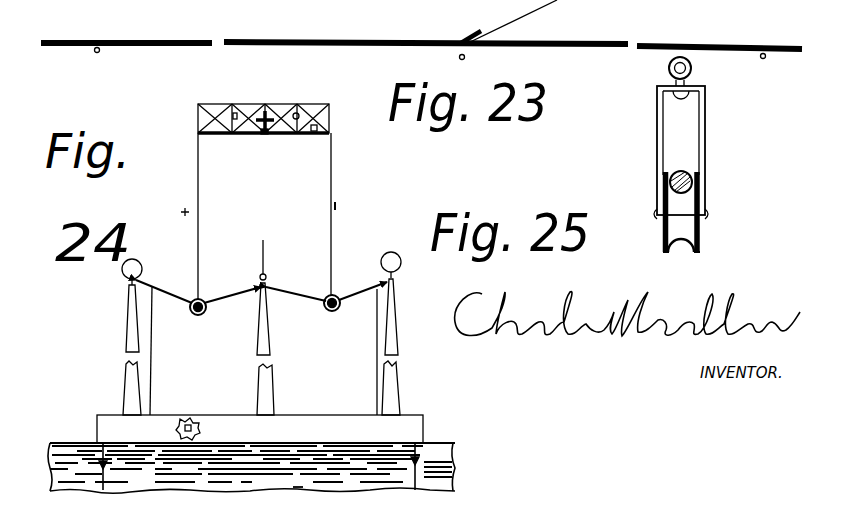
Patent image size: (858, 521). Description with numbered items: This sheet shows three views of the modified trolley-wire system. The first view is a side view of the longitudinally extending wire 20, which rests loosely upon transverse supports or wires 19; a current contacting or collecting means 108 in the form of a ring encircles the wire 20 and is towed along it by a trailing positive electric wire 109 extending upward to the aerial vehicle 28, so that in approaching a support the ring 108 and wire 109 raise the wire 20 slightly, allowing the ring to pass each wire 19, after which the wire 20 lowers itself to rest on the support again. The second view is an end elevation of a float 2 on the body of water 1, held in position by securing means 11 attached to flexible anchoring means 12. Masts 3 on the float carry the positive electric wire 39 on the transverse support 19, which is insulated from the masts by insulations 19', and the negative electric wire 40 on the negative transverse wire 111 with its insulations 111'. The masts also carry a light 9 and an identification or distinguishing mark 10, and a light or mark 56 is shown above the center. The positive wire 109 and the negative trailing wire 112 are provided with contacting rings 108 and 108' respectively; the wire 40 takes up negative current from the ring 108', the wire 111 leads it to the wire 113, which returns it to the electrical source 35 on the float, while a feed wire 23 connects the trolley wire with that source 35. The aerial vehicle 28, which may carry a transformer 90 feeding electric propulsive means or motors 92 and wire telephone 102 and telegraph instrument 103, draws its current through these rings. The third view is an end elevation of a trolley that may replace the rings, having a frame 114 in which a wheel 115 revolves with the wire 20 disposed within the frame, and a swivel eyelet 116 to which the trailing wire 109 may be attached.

In FIG. 24, the body of water 1 is at (66, 443).
In FIG. 24, the float 2 is at (260, 430).
In FIG. 24, the mast 3 is at (124, 377).
In FIG. 24, the light 9 is at (125, 274).
In FIG. 24, the identification mark 10 is at (402, 267).
In FIG. 24, the securing means 11 is at (418, 461).
In FIG. 24, the anchoring means 12 is at (454, 472).
In FIG. 23, the transverse support wire 19 is at (453, 70).
In FIG. 24, the transverse support wire 19 is at (164, 313).
In FIG. 24, the insulation 19' is at (234, 313).
In FIG. 23, the longitudinally extending wire 20 is at (300, 35).
In FIG. 25, the longitudinally extending wire 20 is at (681, 170).
In FIG. 24, the feed wire 23 is at (153, 376).
In FIG. 24, the aerial vehicle 28 is at (281, 138).
In FIG. 24, the electrical source 35 is at (176, 428).
In FIG. 24, the positive electric wire 39 is at (206, 299).
In FIG. 24, the negative electric wire 40 is at (326, 297).
In FIG. 24, the light or identification mark 56 is at (272, 292).
In FIG. 24, the transformer 90 is at (314, 134).
In FIG. 24, the electric propulsive means 92 is at (262, 137).
In FIG. 24, the wire telephone 102 is at (237, 116).
In FIG. 24, the wire telegraph instrument 103 is at (294, 116).
In FIG. 23, the current contacting ring 108 is at (449, 26).
In FIG. 24, the current contacting ring 108 is at (214, 340).
In FIG. 24, the negative contacting ring 108' is at (341, 338).
In FIG. 23, the positive trailing electric wire 109 is at (543, 7).
In FIG. 24, the positive trailing electric wire 109 is at (200, 200).
In FIG. 24, the negative transverse wire 111 is at (296, 314).
In FIG. 24, the insulation 111' is at (363, 274).
In FIG. 24, the negative trailing wire 112 is at (332, 191).
In FIG. 24, the return wire 113 is at (375, 382).
In FIG. 25, the trolley frame 114 is at (706, 165).
In FIG. 25, the wheel 115 is at (678, 227).
In FIG. 25, the swivel eyelet 116 is at (670, 73).